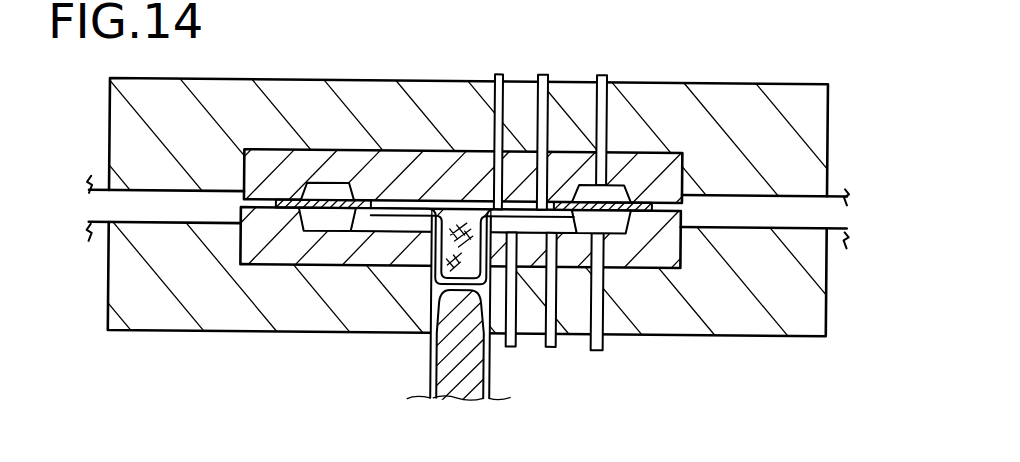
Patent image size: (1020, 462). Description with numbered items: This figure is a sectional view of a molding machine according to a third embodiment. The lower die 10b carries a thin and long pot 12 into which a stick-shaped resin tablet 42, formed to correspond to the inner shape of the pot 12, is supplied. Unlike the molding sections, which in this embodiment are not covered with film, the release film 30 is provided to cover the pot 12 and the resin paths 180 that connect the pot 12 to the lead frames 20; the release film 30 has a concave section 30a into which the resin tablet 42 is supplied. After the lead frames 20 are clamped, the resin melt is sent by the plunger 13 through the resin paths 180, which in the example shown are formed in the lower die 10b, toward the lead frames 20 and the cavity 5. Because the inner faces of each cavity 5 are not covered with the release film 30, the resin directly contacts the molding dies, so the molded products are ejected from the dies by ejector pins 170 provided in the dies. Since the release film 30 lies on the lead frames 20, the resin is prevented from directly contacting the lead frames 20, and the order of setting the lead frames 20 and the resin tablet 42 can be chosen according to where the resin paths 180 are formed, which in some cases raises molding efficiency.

The cavity 5 is at (618, 218).
The lower die 10b is at (270, 246).
The pot 12 is at (527, 329).
The plunger 13 is at (470, 392).
The lead frame 20 is at (632, 181).
The release film 30 is at (412, 204).
The concave section 30a is at (461, 211).
The resin tablet 42 is at (432, 284).
The ejector pin 170 is at (590, 306).
The resin path 180 is at (416, 411).